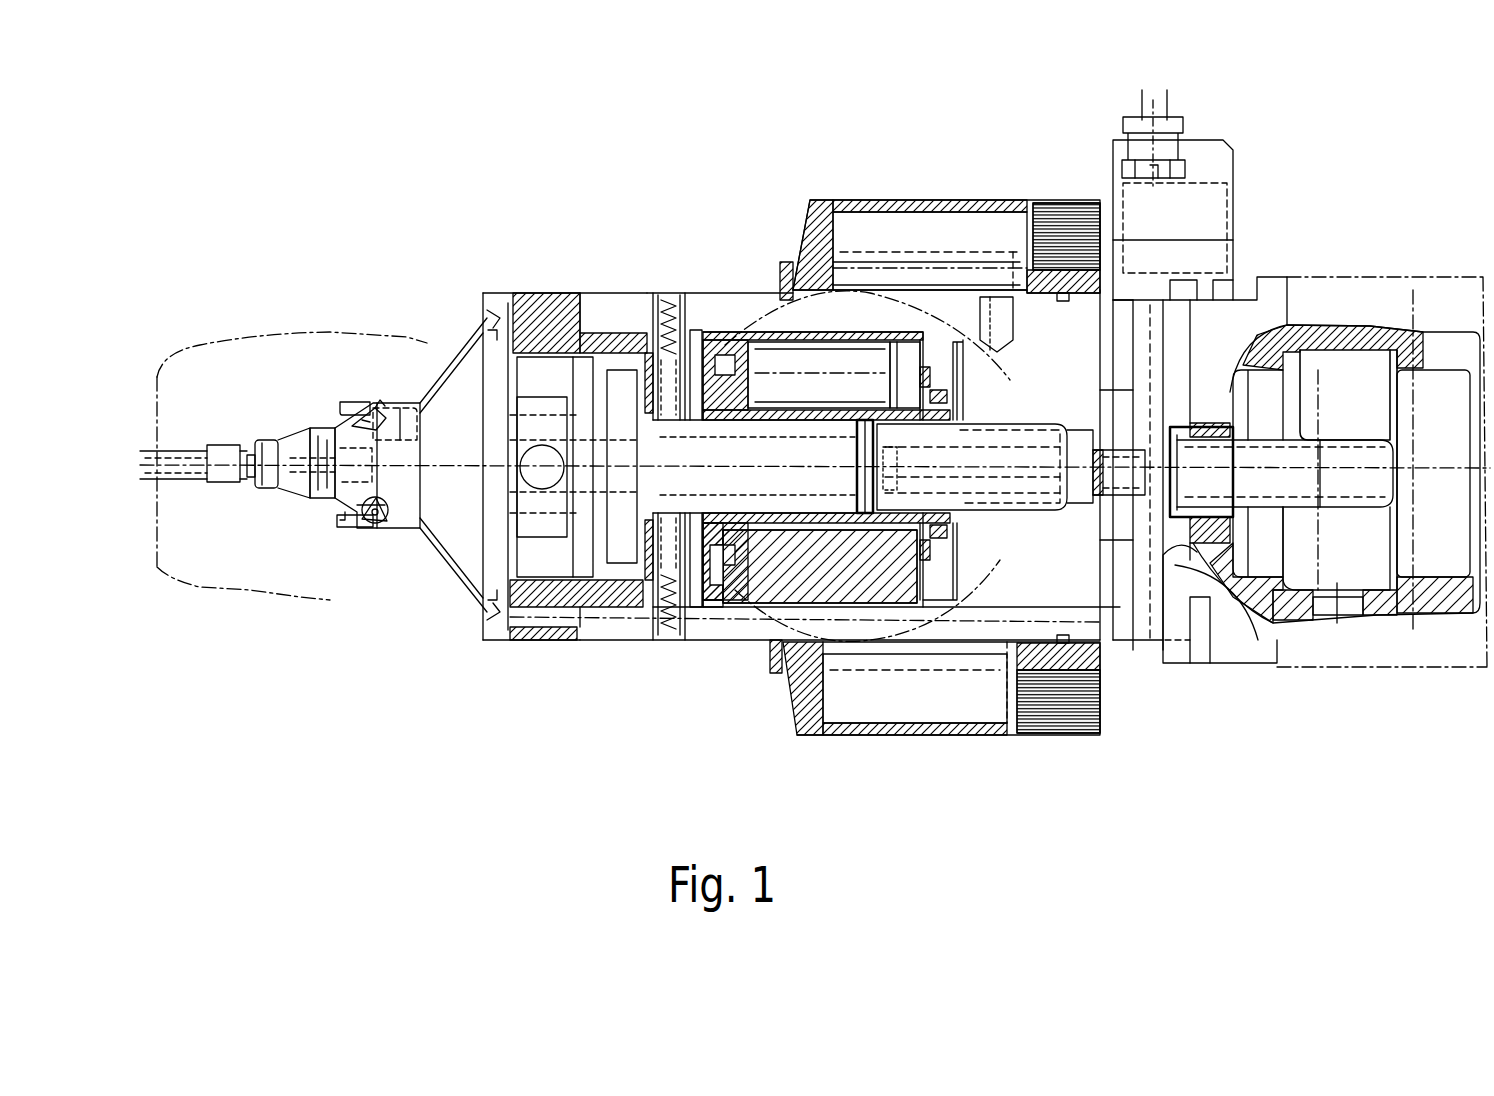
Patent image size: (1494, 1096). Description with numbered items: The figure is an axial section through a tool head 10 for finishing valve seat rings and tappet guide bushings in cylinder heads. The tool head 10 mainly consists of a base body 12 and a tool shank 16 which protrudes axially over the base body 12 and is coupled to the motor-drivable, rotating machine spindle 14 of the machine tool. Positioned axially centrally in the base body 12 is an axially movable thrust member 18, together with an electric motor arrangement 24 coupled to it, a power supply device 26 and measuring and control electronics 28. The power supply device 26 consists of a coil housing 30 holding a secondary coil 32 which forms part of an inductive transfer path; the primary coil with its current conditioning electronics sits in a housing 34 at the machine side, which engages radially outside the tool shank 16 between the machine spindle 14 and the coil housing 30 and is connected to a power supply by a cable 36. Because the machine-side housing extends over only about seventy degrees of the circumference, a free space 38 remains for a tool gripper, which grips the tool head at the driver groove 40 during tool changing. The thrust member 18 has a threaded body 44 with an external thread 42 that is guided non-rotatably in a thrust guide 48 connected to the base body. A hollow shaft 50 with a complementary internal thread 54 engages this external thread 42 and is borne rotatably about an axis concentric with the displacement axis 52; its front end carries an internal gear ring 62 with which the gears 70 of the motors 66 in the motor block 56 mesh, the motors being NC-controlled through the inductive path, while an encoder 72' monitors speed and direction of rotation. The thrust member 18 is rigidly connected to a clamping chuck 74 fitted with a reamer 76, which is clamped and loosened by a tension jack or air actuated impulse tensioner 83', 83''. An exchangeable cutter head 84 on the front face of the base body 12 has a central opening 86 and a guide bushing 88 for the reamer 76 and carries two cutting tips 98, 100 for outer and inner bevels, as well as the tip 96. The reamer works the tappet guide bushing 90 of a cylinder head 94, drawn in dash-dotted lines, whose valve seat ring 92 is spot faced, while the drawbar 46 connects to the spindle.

The tool head 10 is at (747, 285).
The base body 12 is at (723, 305).
The machine spindle 14 is at (1373, 297).
The tool shank 16 is at (1405, 345).
The thrust member 18 is at (963, 367).
The electric motor arrangement 24 is at (765, 580).
The power supply device 26 is at (1102, 185).
The measuring and control electronics 28 is at (913, 233).
The coil housing 30 is at (1048, 200).
The secondary coil 32 is at (1077, 233).
The housing at the machine side 34 is at (1197, 217).
The cable 36 is at (1167, 102).
The free space 38 is at (1157, 657).
The driver groove 40 is at (1197, 655).
The external thread 42 is at (1025, 433).
The threaded body 44 is at (985, 455).
The draw bar 46 is at (1300, 440).
The thrust guide 48 is at (1207, 425).
The hollow shaft 50 is at (858, 560).
The displacement axis 52 is at (785, 450).
The internal thread 54 is at (958, 507).
The motor block 56 is at (780, 613).
The internal gear ring 62 is at (747, 603).
The motors 66 is at (843, 365).
The gears 70 is at (742, 370).
The encoder 72' is at (925, 272).
The clamping chuck 74 is at (704, 292).
The reamer 76 is at (210, 440).
The tension jack 83' is at (646, 621).
The air actuated impulse tensioner 83'' is at (664, 305).
The exchangeable cutter head 84 is at (470, 302).
The central opening 86 is at (272, 440).
The guide bushing 88 is at (314, 440).
The tappet guide bushing 90 is at (172, 432).
The valve seat ring 92 is at (340, 513).
The cylinder head 94 is at (220, 567).
The cutting insert 96 is at (387, 530).
The cutting tip 98 is at (470, 345).
The cutting tip 100 is at (386, 405).